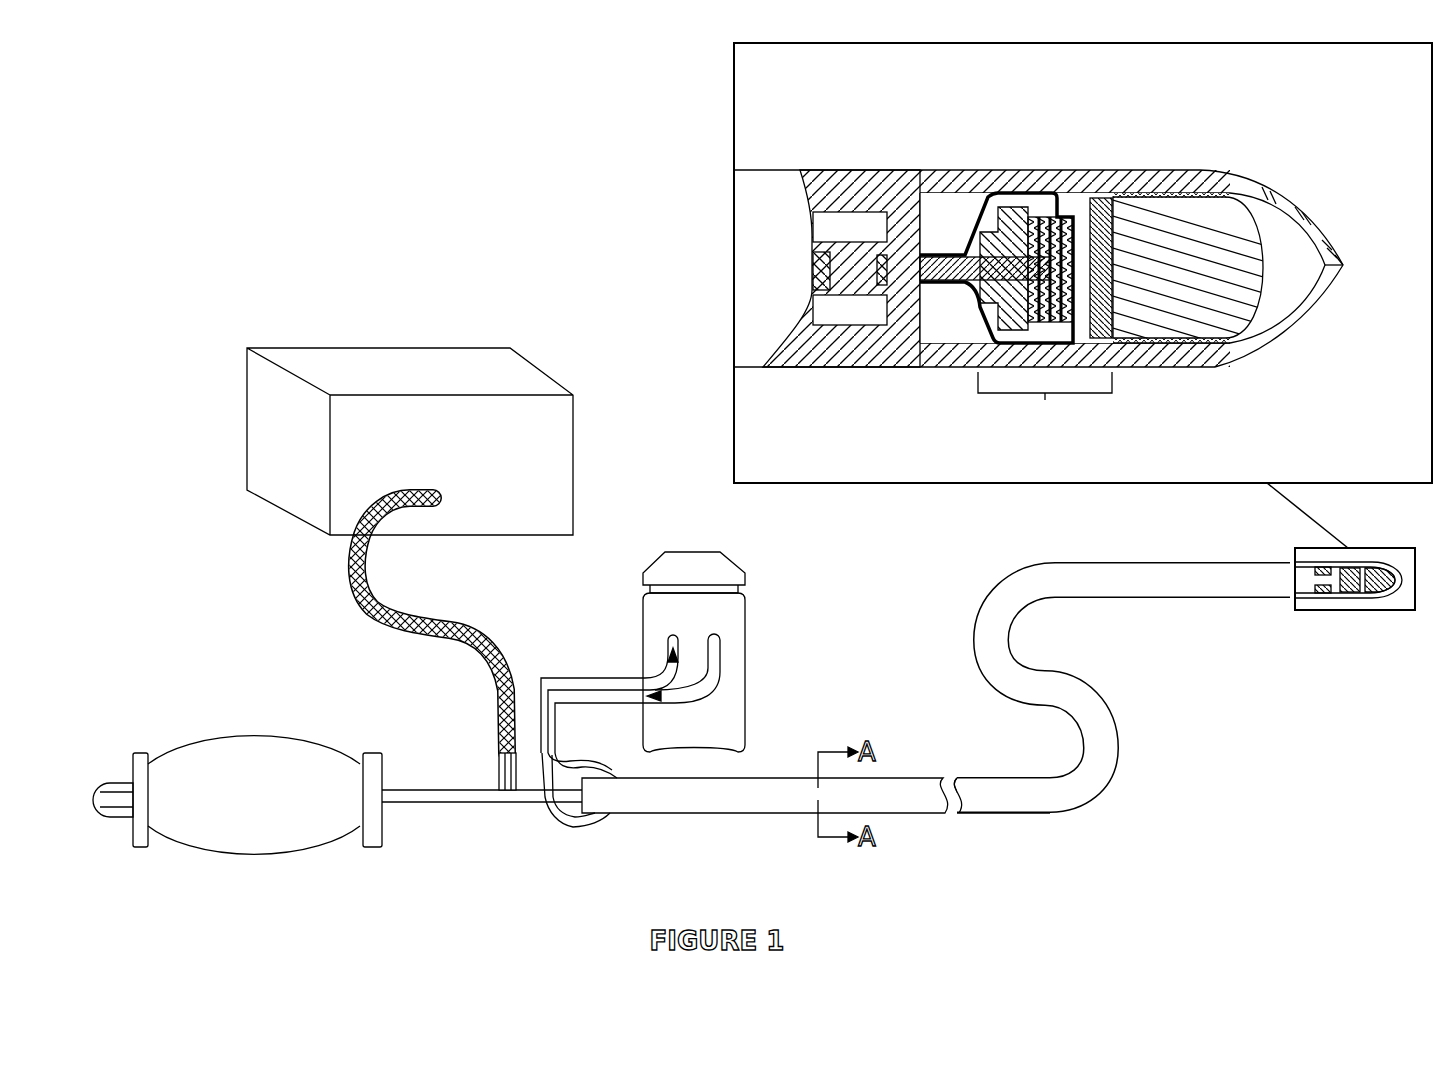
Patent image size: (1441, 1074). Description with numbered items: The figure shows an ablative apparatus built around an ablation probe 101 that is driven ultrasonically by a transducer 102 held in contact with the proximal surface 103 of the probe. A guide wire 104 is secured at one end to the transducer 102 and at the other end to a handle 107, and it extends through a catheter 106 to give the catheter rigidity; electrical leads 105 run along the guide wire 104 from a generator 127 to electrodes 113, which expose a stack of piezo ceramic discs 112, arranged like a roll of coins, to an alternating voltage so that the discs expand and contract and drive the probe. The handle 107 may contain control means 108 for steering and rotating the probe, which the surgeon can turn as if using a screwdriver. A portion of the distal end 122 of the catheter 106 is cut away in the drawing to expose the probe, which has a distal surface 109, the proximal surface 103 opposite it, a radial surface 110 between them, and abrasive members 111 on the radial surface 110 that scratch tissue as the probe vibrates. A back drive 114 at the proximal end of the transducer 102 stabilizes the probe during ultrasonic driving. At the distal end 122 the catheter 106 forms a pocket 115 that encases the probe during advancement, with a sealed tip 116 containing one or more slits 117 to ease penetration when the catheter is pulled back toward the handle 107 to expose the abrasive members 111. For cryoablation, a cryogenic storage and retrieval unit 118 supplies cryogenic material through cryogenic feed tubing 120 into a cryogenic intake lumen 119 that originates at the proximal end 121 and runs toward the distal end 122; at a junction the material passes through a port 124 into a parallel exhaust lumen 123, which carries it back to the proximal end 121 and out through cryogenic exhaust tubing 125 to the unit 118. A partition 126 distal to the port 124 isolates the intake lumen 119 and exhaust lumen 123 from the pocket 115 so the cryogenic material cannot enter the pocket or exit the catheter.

The ablation probe 101 is at (1200, 242).
The transducer 102 is at (1045, 406).
The proximal surface 103 is at (1113, 220).
The guide wire 104 is at (926, 255).
The electrical leads 105 is at (980, 232).
The catheter 106 is at (772, 243).
The handle 107 is at (263, 770).
The control means 108 is at (110, 790).
The distal surface 109 is at (1262, 285).
The radial surface 110 is at (1205, 337).
The abrasive members 111 is at (1152, 340).
The piezo ceramic discs 112 is at (1065, 218).
The electrodes 113 is at (1070, 220).
The back drive 114 is at (1013, 218).
The pocket 115 is at (1282, 253).
The sealed tip 116 is at (1337, 257).
The slits 117 is at (1333, 268).
The cryogenic storage and retrieval unit 118 is at (703, 570).
The cryogenic intake lumen 119 is at (835, 305).
The cryogenic feed tubing 120 is at (720, 643).
The proximal end 121 is at (588, 840).
The distal end 122 is at (1347, 612).
The exhaust lumen 123 is at (820, 222).
The port 124 is at (852, 270).
The cryogenic exhaust tubing 125 is at (618, 685).
The partition 126 is at (905, 320).
The generator 127 is at (540, 430).